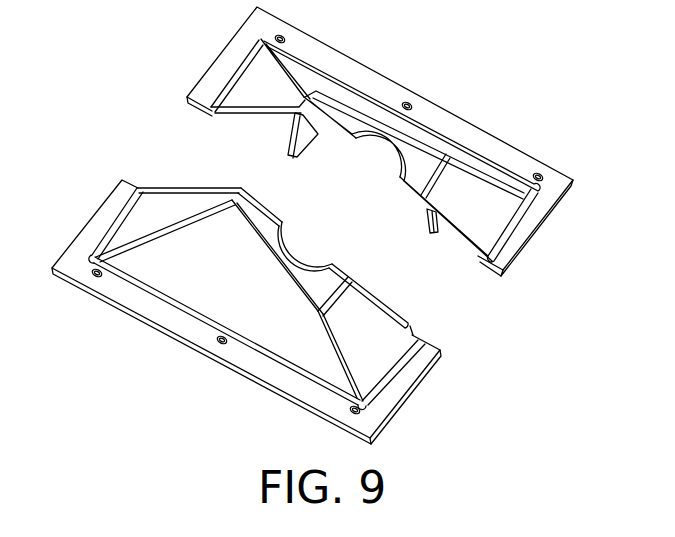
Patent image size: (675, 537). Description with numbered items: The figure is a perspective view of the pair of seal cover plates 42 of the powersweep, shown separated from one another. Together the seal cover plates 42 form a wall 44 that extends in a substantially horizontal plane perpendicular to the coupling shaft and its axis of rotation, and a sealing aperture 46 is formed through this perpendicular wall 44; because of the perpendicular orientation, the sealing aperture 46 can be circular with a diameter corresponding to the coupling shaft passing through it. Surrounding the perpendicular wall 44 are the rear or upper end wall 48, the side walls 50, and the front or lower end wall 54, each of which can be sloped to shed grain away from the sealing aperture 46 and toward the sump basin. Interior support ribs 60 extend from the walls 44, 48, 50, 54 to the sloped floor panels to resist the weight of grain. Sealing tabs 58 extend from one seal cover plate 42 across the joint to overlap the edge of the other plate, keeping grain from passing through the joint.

The seal cover plate 42 is at (440, 105).
The wall 44 is at (330, 110).
The sealing aperture 46 is at (302, 253).
The rear or upper end wall 48 is at (477, 200).
The side wall 50 is at (378, 101).
The front or lower end wall 54 is at (262, 87).
The sealing tab 58 is at (258, 202).
The support rib 60 is at (292, 143).